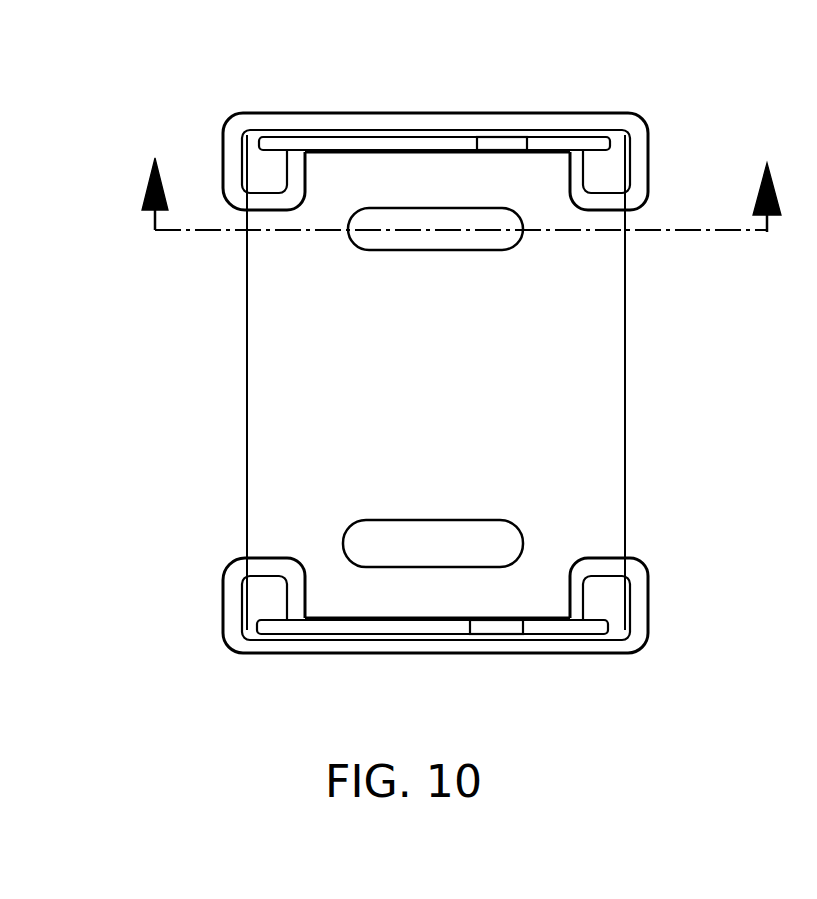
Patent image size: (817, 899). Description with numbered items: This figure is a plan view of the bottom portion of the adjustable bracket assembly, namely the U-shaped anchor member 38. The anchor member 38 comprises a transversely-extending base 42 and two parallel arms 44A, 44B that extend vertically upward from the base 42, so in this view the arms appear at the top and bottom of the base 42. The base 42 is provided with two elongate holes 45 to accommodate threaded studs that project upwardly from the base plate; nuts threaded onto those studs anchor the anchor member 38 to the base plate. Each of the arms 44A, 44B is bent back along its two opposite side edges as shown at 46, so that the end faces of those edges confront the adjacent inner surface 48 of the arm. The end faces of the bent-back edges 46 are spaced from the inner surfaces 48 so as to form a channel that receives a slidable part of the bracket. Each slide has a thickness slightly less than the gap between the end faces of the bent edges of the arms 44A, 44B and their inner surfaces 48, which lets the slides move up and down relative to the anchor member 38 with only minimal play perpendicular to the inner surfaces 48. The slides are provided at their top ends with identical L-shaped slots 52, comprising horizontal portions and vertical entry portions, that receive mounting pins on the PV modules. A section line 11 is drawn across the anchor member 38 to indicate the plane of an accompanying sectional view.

The section line 11- 11 is at (466, 195).
The anchor member 38 is at (638, 372).
The base 42 is at (590, 441).
The arm 44A is at (590, 648).
The arm 44B is at (590, 114).
The elongate hole 45 is at (448, 250).
The bent-back side edge 46 is at (220, 150).
The inner surface 48 is at (446, 158).
The L-shaped slot 52 is at (500, 145).